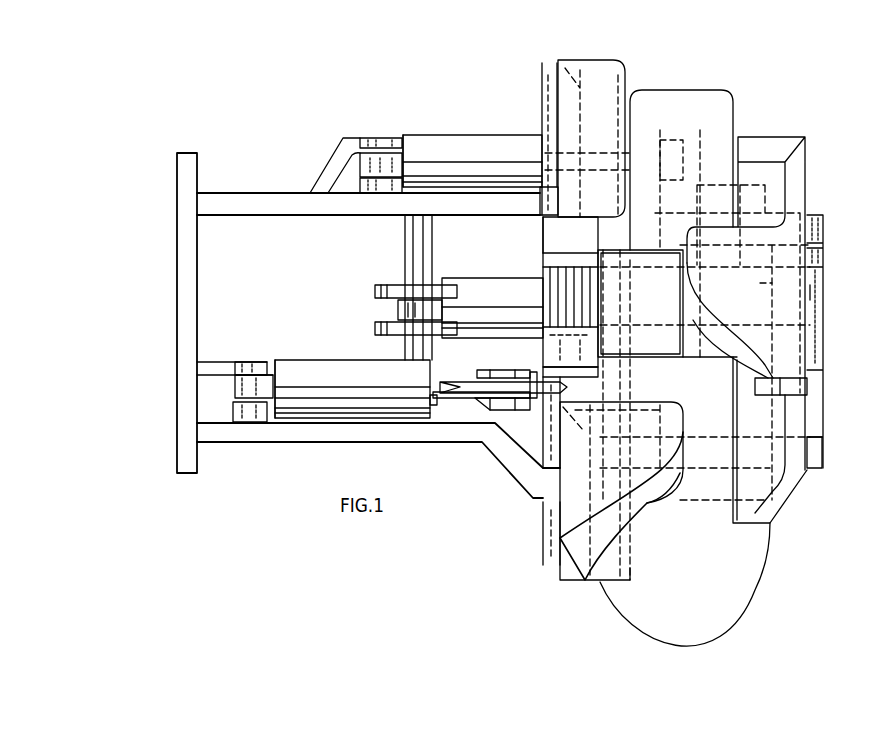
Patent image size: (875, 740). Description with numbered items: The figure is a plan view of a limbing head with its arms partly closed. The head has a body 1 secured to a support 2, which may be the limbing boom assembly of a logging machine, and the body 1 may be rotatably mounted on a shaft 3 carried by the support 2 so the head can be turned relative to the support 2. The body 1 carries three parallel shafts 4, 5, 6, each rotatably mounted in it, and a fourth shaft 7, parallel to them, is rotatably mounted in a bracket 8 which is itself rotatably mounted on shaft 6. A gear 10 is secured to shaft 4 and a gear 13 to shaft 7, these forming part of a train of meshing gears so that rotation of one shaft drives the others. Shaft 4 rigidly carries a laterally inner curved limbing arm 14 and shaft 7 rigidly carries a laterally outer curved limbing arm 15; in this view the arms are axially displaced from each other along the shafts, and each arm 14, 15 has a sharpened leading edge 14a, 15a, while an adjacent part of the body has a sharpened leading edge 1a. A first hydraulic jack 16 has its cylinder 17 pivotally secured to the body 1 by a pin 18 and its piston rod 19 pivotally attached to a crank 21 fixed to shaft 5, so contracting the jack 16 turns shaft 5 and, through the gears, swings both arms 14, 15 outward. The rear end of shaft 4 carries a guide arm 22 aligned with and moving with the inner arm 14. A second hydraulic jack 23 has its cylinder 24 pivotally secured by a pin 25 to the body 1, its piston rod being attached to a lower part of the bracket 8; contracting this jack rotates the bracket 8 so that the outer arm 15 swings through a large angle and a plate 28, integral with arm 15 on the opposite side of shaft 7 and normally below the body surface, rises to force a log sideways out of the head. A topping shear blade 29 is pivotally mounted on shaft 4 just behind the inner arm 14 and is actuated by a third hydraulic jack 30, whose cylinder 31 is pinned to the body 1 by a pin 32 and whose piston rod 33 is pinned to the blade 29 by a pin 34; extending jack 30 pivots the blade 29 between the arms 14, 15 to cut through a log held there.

The body 1 is at (301, 197).
The sharpened leading edge 1a is at (720, 615).
The support 2 is at (190, 375).
The shaft 3 is at (177, 318).
The shaft 4 is at (548, 259).
The shaft 5 is at (639, 141).
The shaft 6 is at (727, 196).
The fourth shaft 7 is at (830, 333).
The bracket 8 is at (817, 453).
The gear 10 is at (546, 279).
The gear 13 is at (812, 292).
The inner curved limbing arm 14 is at (611, 499).
The sharpened leading edge 14a is at (640, 505).
The outer curved limbing arm 15 is at (763, 288).
The sharpened leading edge 15a is at (695, 322).
The first hydraulic jack 16 is at (476, 131).
The cylinder 17 is at (420, 142).
The pin 18 is at (364, 153).
The piston rod 19 is at (563, 158).
The crank 21 is at (676, 144).
The guide arm 22 is at (591, 68).
The second hydraulic jack 23 is at (486, 274).
The cylinder 24 is at (453, 278).
The pin 25 is at (408, 282).
The plate 28 is at (597, 268).
The topping shear blade 29 is at (472, 380).
The third hydraulic jack 30 is at (333, 354).
The cylinder 31 is at (295, 365).
The pin 32 is at (248, 380).
The piston rod 33 is at (436, 394).
The pin 34 is at (507, 368).